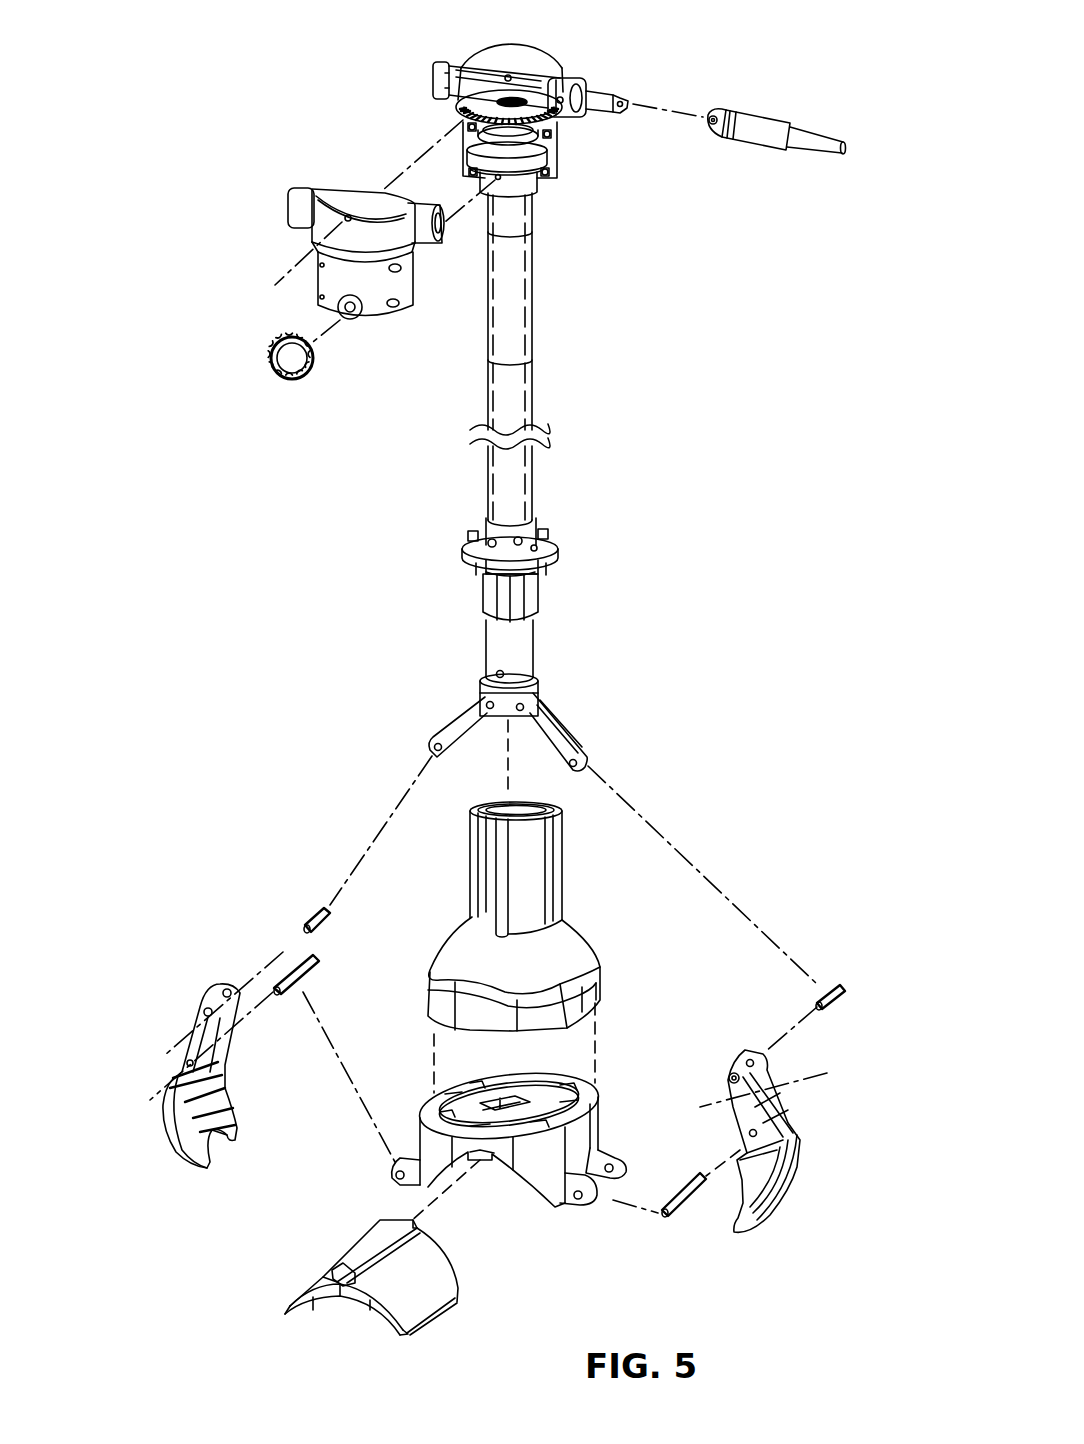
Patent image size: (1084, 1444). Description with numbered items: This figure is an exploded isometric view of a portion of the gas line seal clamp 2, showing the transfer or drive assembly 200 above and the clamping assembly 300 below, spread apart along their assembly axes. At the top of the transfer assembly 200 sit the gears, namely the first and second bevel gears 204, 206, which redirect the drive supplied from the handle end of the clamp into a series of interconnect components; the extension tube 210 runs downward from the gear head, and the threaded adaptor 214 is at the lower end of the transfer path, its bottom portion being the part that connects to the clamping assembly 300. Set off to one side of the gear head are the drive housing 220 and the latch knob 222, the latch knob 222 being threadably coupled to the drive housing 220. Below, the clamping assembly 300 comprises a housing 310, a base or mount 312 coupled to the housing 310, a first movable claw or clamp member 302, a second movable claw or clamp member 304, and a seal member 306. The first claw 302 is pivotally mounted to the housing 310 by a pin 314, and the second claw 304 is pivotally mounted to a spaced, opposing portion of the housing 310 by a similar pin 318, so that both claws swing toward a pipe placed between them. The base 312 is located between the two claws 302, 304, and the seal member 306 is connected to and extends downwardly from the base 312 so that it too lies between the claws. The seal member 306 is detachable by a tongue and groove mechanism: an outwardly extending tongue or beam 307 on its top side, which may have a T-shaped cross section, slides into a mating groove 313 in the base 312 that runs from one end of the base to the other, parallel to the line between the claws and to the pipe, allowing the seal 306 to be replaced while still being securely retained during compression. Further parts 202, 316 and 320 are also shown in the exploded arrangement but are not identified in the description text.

The gas line seal clamp 2 is at (752, 68).
The transfer or drive assembly 200 is at (402, 52).
The pivot shaft 202 is at (598, 92).
The first bevel gear 204 is at (546, 80).
The second bevel gear 206 is at (458, 108).
The extension tube 210 is at (538, 292).
The threaded adaptor 214 is at (522, 648).
The drive housing 220 is at (372, 302).
The latch knob 222 is at (288, 372).
The clamping assembly 300 is at (683, 830).
The first movable claw or clamp member 302 is at (170, 1114).
The second movable claw or clamp member 304 is at (782, 1185).
The seal member 306 is at (339, 1307).
The tongue or beam 307 is at (390, 1228).
The housing 310 is at (536, 872).
The base or mount 312 is at (552, 1086).
The groove 313 is at (488, 1165).
The pin 314 is at (318, 960).
The pin 316 is at (328, 912).
The pin 318 is at (672, 1216).
The pin 320 is at (845, 987).